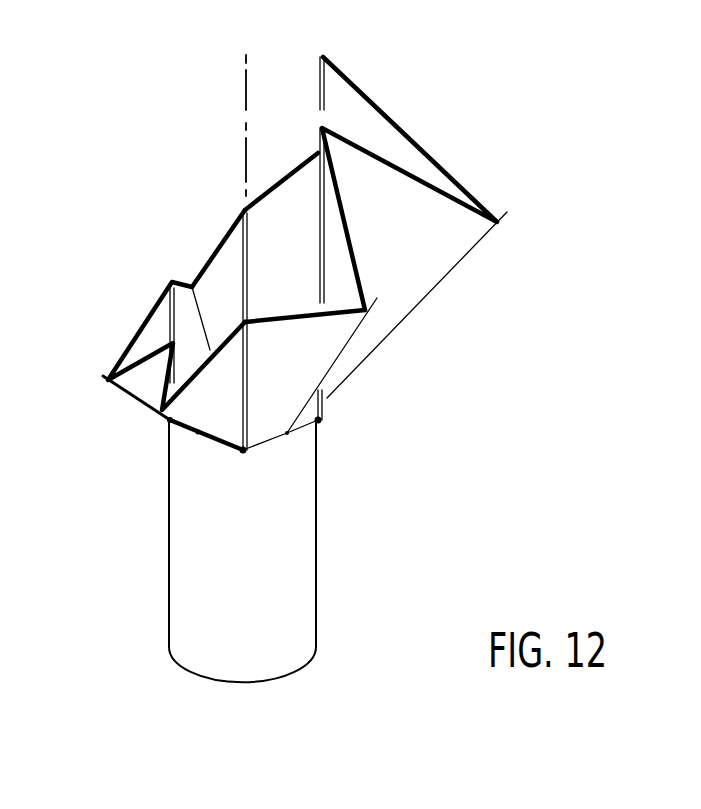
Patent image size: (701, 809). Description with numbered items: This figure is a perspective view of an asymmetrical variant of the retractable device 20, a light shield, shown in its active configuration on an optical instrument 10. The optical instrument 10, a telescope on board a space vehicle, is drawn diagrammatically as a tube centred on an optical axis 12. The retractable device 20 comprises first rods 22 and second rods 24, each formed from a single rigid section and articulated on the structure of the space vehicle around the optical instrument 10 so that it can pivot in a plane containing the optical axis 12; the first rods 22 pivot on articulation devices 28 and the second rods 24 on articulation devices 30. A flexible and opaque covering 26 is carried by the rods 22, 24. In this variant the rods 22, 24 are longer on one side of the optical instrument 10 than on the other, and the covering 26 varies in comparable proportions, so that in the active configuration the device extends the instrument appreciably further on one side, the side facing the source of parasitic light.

The optical instrument 10 is at (185, 565).
The optical axis 12 is at (245, 91).
The retractable device 20 is at (458, 158).
The first rods 22 is at (320, 248).
The second rods 24 is at (190, 281).
The covering 26 is at (465, 237).
The articulation devices for the first rods 28 is at (243, 452).
The articulation devices for the second rods 30 is at (287, 434).